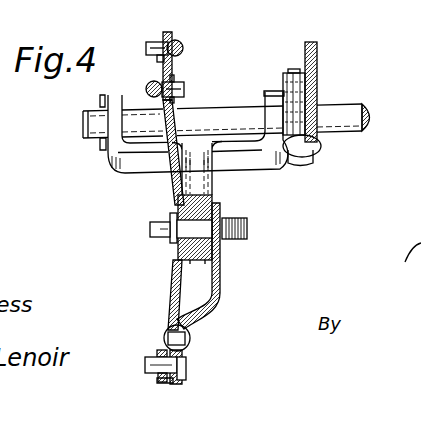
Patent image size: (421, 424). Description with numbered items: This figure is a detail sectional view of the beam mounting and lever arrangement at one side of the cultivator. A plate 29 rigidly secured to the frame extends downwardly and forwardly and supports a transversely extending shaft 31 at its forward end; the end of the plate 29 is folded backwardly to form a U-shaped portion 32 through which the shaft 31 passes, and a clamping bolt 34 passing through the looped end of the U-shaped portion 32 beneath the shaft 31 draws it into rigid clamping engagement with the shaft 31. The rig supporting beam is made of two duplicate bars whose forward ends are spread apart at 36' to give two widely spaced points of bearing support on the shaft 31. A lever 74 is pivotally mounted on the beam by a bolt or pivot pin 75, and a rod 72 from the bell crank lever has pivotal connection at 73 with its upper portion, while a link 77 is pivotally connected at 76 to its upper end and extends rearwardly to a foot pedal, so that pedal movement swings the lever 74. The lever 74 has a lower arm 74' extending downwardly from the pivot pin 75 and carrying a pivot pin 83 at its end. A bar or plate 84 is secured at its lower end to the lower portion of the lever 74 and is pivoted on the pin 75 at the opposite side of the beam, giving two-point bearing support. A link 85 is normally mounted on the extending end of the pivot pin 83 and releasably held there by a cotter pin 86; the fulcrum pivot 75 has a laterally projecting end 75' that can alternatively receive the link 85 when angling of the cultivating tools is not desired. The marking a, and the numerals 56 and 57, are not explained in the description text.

The plate 29 is at (317, 53).
The shaft 31 is at (350, 110).
The U-shaped portion 32 is at (285, 72).
The clamping bolt 34 is at (319, 157).
The spread-apart forward ends of rig beam bars 36' is at (170, 134).
The hub 56 is at (191, 263).
The T stem / boss 57 is at (214, 182).
The rod 72 is at (149, 92).
The pivotal connection 73 is at (172, 68).
The lever 74 is at (153, 155).
The lower arm 74' is at (148, 295).
The pivot pin 75 is at (228, 227).
The laterally projecting end 75' is at (133, 240).
The bolt head marking a is at (160, 230).
The pivotal connection 76 is at (170, 43).
The link 77 is at (183, 43).
The pivot pin 83 is at (187, 365).
The bar or plate 84 is at (202, 310).
The link 85 is at (160, 385).
The cotter pin 86 is at (157, 354).